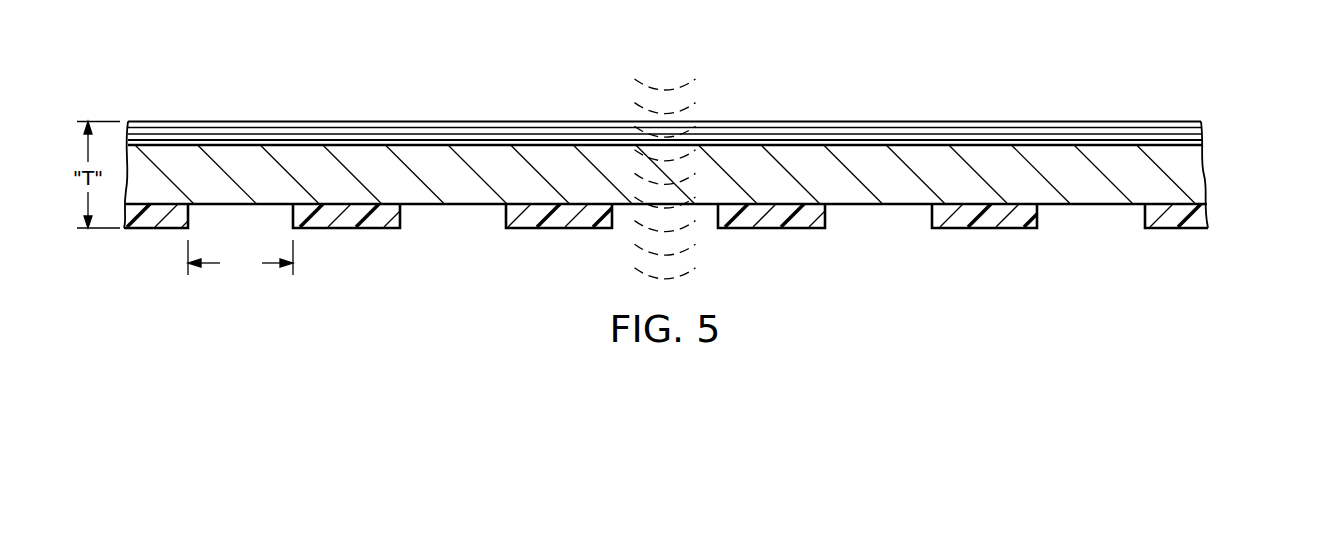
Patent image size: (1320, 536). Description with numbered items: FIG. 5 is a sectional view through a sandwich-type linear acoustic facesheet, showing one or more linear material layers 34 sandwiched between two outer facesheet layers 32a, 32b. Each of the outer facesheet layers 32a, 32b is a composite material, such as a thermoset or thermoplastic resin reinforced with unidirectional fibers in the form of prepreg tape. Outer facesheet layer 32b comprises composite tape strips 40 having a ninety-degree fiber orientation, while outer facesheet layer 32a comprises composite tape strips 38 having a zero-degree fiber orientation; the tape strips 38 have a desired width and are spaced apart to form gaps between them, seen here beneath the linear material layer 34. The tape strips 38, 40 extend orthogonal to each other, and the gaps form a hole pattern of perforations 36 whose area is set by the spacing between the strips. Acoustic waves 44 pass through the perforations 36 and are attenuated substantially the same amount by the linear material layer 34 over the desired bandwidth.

The outer facesheet layer 32a is at (1240, 128).
The outer facesheet layer 32b is at (1240, 221).
The linear material layer 34 is at (1092, 196).
The perforations 36 is at (443, 234).
The composite tape strips 38 is at (148, 219).
The composite tape strips 40 is at (292, 121).
The acoustic waves 44 is at (693, 84).